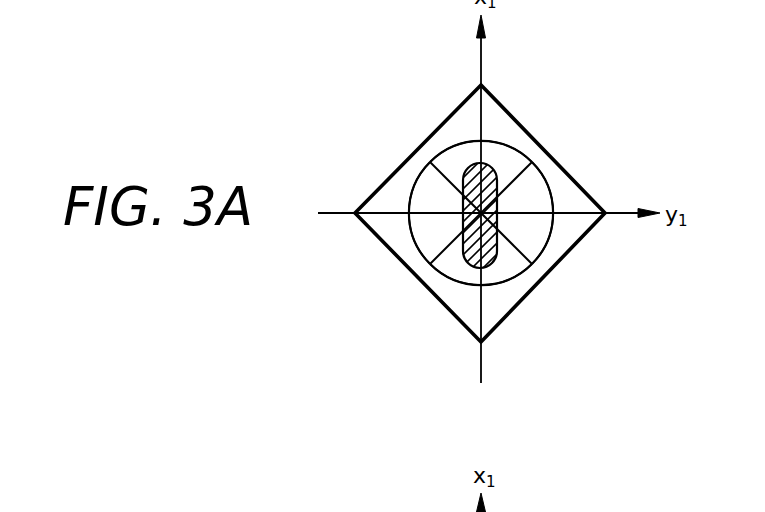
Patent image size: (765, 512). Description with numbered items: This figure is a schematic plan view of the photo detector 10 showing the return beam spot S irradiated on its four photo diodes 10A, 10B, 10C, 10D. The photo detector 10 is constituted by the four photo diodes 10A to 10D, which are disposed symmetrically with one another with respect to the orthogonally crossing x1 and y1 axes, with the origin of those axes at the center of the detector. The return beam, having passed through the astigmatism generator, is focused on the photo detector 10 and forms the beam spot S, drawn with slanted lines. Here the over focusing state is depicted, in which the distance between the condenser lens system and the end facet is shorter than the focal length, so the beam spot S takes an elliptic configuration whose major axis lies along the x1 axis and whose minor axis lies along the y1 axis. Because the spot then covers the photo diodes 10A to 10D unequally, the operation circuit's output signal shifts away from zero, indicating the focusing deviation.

The photo detector 10 is at (510, 280).
The photo diode 10A is at (508, 166).
The photo diode 10B is at (530, 197).
The photo diode 10C is at (447, 260).
The photo diode 10D is at (423, 227).
The beam spot S is at (466, 168).